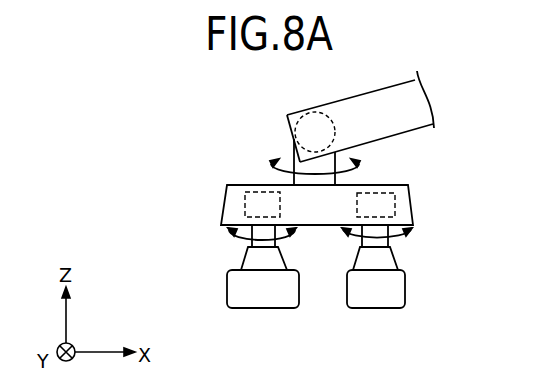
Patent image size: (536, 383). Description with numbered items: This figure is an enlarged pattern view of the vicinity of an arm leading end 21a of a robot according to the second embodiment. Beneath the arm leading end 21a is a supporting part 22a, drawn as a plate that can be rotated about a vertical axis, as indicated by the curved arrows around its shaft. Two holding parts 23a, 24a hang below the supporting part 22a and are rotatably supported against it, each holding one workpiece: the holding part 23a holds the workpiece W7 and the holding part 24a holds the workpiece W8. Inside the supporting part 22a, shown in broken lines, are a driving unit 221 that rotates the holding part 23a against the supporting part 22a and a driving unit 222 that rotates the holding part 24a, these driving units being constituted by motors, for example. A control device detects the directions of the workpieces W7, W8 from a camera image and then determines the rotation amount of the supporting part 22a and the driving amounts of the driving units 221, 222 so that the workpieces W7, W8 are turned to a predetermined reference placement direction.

The arm leading end 21a is at (338, 102).
The supporting part 22a is at (226, 198).
The driving unit 221 is at (263, 192).
The driving unit 222 is at (380, 193).
The holding part 23a is at (246, 254).
The holding part 24a is at (392, 258).
The workpiece W7 is at (260, 308).
The workpiece W8 is at (372, 308).